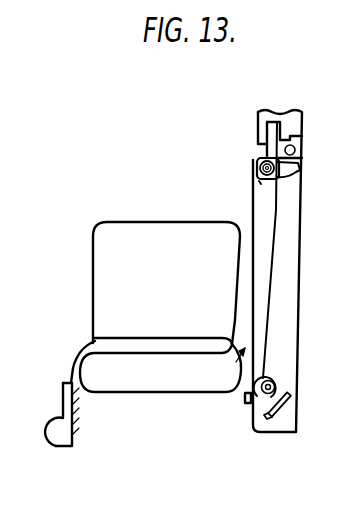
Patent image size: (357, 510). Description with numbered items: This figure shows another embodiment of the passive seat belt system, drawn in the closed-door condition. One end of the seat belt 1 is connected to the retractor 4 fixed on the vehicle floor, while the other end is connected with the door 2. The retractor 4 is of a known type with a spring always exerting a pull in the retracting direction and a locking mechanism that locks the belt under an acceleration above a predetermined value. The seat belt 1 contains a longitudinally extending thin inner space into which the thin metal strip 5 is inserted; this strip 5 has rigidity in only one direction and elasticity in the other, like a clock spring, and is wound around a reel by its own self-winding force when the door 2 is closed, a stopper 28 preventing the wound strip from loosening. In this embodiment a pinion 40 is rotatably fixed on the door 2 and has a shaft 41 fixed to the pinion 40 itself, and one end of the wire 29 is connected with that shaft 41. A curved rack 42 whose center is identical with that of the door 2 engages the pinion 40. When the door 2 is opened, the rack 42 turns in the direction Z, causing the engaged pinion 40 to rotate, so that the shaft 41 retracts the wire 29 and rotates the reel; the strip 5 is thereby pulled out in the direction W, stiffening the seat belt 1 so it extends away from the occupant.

The seat belt 1 is at (76, 352).
The door 2 is at (298, 318).
The retractor 4 is at (57, 448).
The thin metal strip 5 is at (280, 380).
The stopper 28 is at (286, 405).
The wire 29 is at (275, 237).
The pinion 40 is at (257, 178).
The shaft 41 is at (256, 160).
The curved rack 42 is at (302, 168).
The direction W is at (243, 339).
The direction Z is at (245, 200).